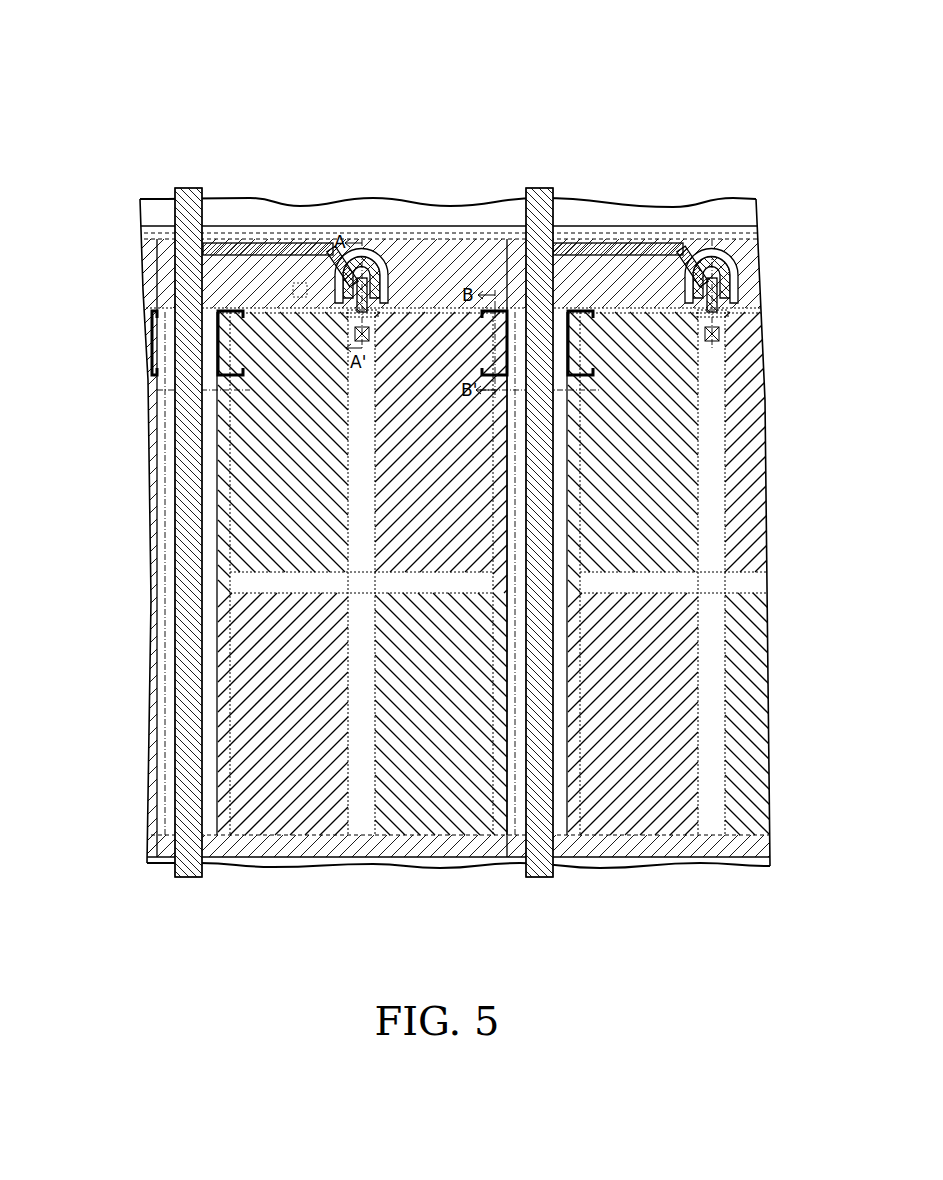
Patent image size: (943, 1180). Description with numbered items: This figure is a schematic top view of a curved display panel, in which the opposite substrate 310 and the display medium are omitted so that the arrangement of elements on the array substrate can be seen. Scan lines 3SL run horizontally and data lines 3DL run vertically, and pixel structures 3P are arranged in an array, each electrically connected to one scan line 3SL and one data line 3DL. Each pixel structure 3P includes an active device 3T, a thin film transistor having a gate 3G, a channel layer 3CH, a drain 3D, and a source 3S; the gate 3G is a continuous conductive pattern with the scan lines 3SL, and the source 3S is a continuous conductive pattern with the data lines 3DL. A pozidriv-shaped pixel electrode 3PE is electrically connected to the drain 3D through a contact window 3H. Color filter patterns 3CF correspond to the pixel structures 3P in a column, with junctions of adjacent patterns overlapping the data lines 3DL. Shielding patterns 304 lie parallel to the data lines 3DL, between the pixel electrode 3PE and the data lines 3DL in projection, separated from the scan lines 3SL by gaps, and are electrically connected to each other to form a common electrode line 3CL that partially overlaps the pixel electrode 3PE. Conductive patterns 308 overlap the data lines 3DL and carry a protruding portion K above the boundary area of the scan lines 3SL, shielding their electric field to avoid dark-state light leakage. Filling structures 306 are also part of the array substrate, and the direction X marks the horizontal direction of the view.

The pixel structure 3P is at (340, 48).
The active device 3T is at (483, 185).
The pixel electrode 3PE is at (385, 330).
The gate 3G is at (325, 292).
The source 3S is at (346, 262).
The channel layer 3CH is at (384, 262).
The drain 3D is at (368, 292).
The contact window 3H is at (300, 290).
The color filter pattern 3CF is at (262, 245).
The data line 3DL is at (183, 198).
The scan line 3SL is at (160, 282).
The common electrode line 3CL is at (152, 848).
The protruding portion K is at (162, 296).
The filling structure 306 is at (480, 300).
The conductive pattern 308 is at (562, 300).
The shielding pattern 304 is at (232, 505).
The direction X is at (160, 398).
The opposite substrate 310 is at (797, 949).